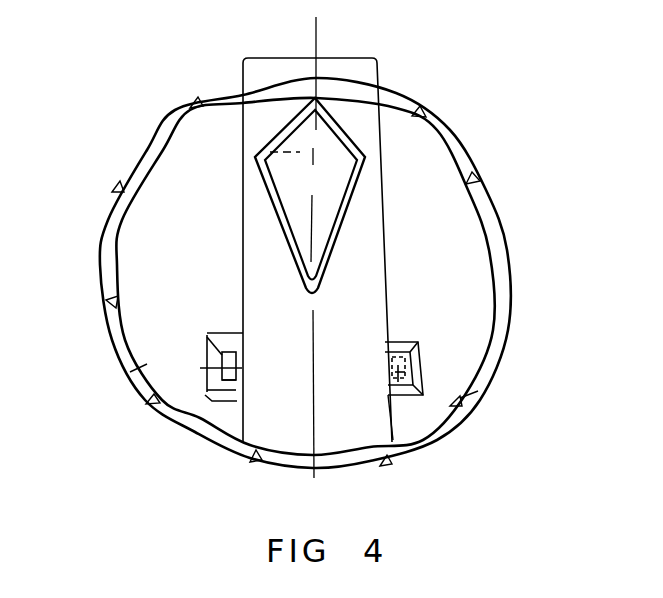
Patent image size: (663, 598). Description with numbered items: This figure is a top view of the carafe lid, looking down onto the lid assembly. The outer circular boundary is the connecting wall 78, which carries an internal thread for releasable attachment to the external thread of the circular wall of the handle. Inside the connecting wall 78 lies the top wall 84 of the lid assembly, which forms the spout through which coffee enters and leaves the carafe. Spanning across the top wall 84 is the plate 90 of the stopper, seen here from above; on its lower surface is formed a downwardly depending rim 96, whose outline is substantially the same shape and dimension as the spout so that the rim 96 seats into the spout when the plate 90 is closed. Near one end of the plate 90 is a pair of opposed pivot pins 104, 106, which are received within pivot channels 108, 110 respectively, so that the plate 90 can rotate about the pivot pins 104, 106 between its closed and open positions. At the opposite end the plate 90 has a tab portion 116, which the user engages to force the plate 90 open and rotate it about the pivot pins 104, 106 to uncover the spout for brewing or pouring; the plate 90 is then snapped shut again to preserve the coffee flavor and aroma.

The connecting wall 78 is at (510, 250).
The top wall 84 is at (135, 266).
The plate 90 is at (252, 232).
The downwardly depending rim 96 is at (353, 197).
The pivot pin 104 is at (237, 375).
The pivot pin 106 is at (396, 400).
The pivot channel 108 is at (215, 352).
The pivot channel 110 is at (420, 392).
The tab portion 116 is at (262, 68).